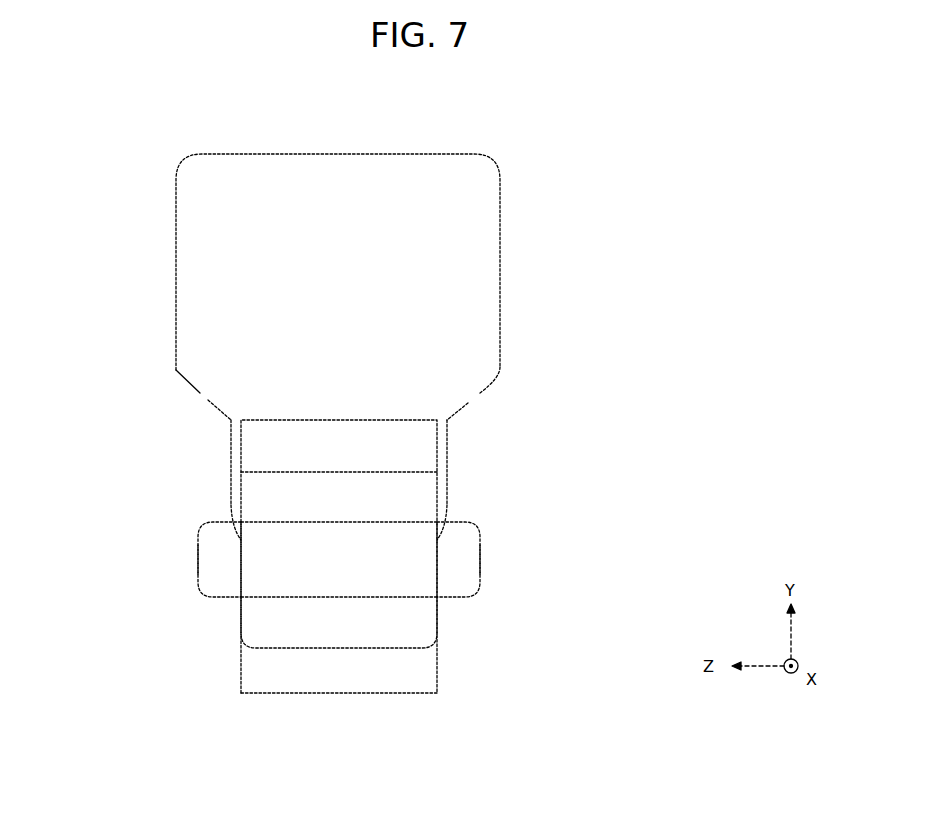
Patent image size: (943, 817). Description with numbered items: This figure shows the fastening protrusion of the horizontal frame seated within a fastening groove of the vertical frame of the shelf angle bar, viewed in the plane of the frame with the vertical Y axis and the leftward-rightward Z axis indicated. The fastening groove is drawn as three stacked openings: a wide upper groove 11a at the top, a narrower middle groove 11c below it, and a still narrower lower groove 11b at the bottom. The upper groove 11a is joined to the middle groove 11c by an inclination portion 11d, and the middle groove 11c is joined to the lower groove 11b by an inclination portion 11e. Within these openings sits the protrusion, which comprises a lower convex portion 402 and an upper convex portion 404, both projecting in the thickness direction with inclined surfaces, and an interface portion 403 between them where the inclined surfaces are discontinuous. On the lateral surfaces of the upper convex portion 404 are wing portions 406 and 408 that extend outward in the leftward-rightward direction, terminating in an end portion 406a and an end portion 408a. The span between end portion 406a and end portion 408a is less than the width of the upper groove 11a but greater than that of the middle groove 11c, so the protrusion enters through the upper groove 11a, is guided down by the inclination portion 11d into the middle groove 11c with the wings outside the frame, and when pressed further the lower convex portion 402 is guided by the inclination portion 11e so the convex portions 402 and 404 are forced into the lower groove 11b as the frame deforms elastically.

The upper groove 11a is at (430, 265).
The lower groove 11b is at (438, 630).
The middle groove 11c is at (442, 447).
The inclination portion 11d is at (480, 393).
The inclination portion 11e is at (445, 520).
The lower convex portion 402 is at (262, 670).
The interface portion 403 is at (262, 645).
The upper convex portion 404 is at (250, 613).
The wing portion 406 is at (218, 547).
The end portion of the wing portion 406a is at (198, 558).
The wing portion 408 is at (456, 560).
The end portion of the wing portion 408a is at (481, 571).